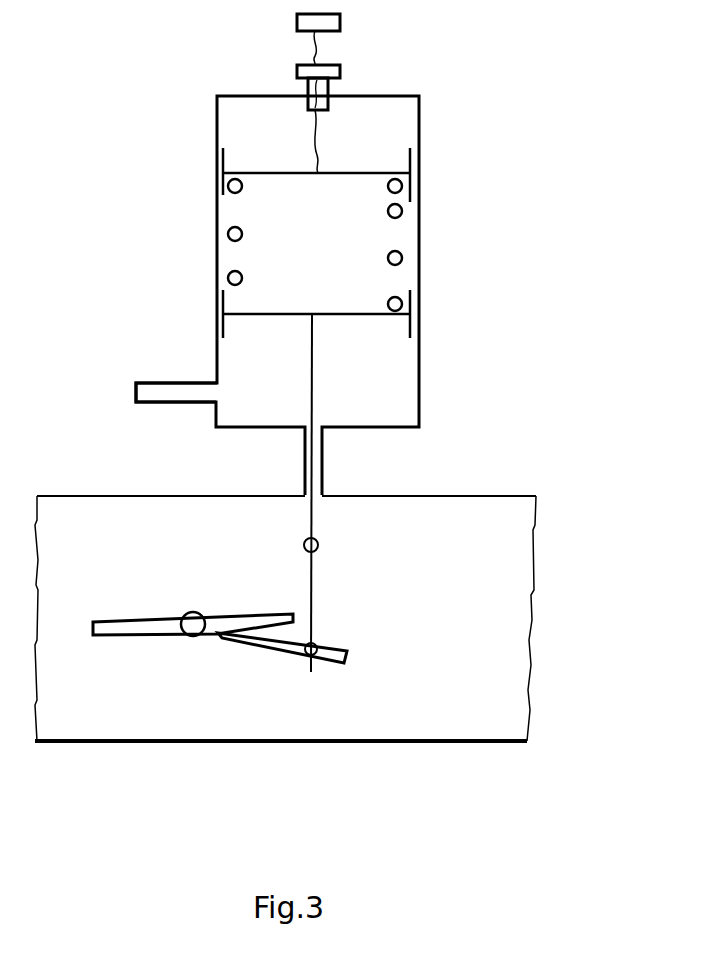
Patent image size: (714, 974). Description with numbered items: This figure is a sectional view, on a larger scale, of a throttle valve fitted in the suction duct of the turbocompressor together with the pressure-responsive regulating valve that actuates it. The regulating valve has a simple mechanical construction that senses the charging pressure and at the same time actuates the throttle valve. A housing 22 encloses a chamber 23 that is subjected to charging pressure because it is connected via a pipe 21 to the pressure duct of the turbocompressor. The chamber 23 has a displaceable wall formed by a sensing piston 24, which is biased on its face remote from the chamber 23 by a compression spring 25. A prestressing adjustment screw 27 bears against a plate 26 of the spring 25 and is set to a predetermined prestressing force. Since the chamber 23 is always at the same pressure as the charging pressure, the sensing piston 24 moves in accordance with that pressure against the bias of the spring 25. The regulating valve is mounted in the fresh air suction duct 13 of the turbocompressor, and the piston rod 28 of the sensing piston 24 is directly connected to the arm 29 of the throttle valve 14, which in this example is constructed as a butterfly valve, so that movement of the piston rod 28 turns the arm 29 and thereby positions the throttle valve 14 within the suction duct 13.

The fresh air suction duct 13 is at (82, 718).
The throttle valve 14 is at (155, 625).
The pipe 21 is at (153, 392).
The housing 22 is at (233, 215).
The chamber 23 is at (402, 388).
The sensing piston 24 is at (337, 314).
The compression spring 25 is at (398, 213).
The plate 26 is at (358, 173).
The prestressing adjustment screw 27 is at (316, 128).
The piston rod 28 is at (319, 547).
The arm 29 is at (342, 655).